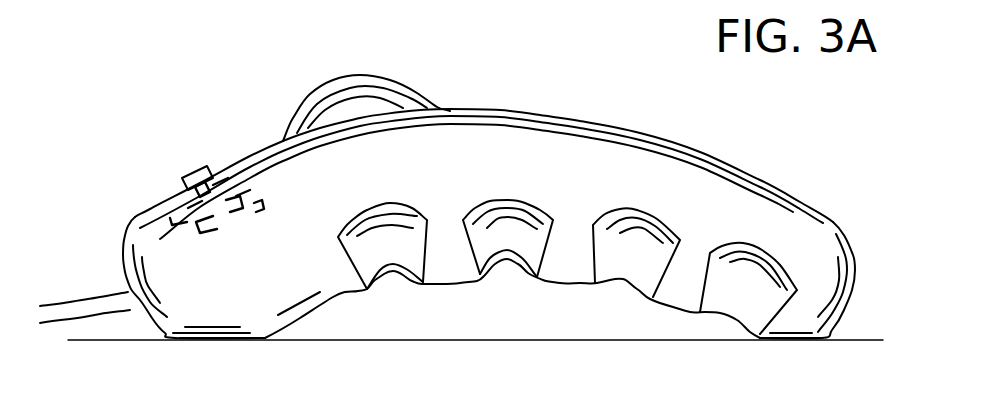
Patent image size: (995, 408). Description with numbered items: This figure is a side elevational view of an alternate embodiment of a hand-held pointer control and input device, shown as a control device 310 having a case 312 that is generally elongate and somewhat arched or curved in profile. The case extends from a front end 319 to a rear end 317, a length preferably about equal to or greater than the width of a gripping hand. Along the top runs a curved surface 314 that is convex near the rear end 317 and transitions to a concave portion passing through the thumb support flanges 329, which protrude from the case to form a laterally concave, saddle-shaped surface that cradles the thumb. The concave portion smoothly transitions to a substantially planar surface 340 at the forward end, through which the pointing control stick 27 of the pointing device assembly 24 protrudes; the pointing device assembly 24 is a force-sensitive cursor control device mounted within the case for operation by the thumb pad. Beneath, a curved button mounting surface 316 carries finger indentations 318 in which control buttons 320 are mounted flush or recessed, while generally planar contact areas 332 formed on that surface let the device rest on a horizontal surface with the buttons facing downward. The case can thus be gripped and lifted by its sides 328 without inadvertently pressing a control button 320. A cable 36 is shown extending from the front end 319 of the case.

The control device 310 is at (278, 80).
The case 312 is at (694, 142).
The curved surface 314 is at (557, 117).
The curved button mounting surface 316 is at (459, 297).
The rear end 317 is at (857, 268).
The finger indentations 318 is at (379, 300).
The front end 319 is at (123, 268).
The control buttons 320 is at (389, 268).
The sides 328 is at (477, 191).
The thumb support flanges 329 is at (370, 100).
The contact areas 332 is at (225, 342).
The planar surface 340 is at (152, 210).
The pointing device assembly 24 is at (211, 160).
The pointing control stick 27 is at (186, 177).
The cable 36 is at (108, 318).